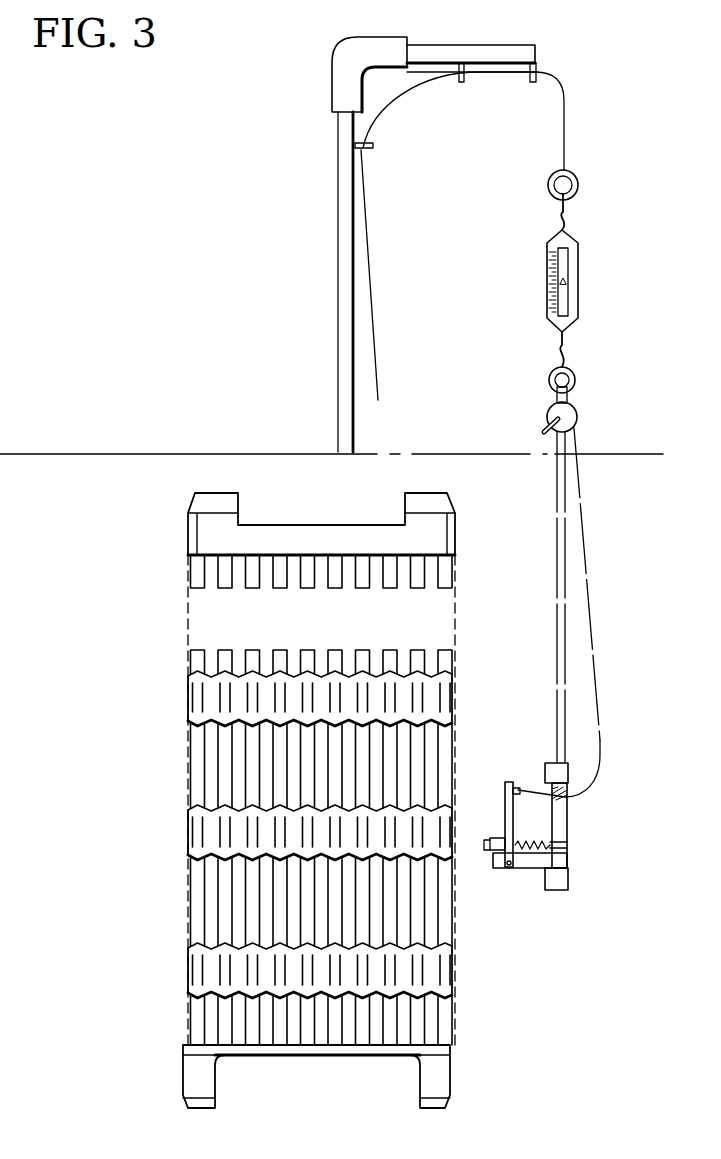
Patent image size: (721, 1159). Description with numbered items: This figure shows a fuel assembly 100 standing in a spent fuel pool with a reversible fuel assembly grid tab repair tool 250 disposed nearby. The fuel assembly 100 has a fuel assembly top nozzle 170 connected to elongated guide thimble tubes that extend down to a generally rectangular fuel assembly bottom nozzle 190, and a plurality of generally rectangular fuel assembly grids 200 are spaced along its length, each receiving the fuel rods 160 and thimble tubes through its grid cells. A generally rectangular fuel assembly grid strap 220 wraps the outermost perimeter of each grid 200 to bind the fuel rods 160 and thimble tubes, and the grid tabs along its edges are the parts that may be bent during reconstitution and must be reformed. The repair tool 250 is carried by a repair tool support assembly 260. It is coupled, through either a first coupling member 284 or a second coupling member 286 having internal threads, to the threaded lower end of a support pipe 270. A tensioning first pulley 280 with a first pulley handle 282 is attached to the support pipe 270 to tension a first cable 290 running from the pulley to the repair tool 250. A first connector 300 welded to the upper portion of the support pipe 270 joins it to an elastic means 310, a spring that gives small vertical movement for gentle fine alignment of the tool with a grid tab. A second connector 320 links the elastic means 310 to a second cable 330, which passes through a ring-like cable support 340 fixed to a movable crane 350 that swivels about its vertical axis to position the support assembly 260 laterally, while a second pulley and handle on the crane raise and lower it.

The fuel assembly 100 is at (263, 791).
The fuel rod 160 is at (202, 770).
The fuel assembly top nozzle 170 is at (212, 525).
The fuel assembly bottom nozzle 190 is at (196, 1073).
The fuel assembly grid 200 is at (288, 834).
The fuel assembly grid strap 220 is at (289, 832).
The reversible fuel assembly grid tab repair tool 250 is at (579, 834).
The repair tool support assembly 260 is at (534, 385).
The support pipe 270 is at (558, 622).
The tensioning first pulley 280 is at (578, 420).
The first pulley handle 282 is at (545, 432).
The first coupling member 284 is at (557, 773).
The second coupling member 286 is at (558, 882).
The first cable 290 is at (588, 560).
The first connector 300 is at (577, 383).
The elastic means 310 is at (580, 265).
The second connector 320 is at (579, 183).
The second cable 330 is at (566, 119).
The cable support 340 is at (461, 85).
The movable crane 350 is at (329, 79).